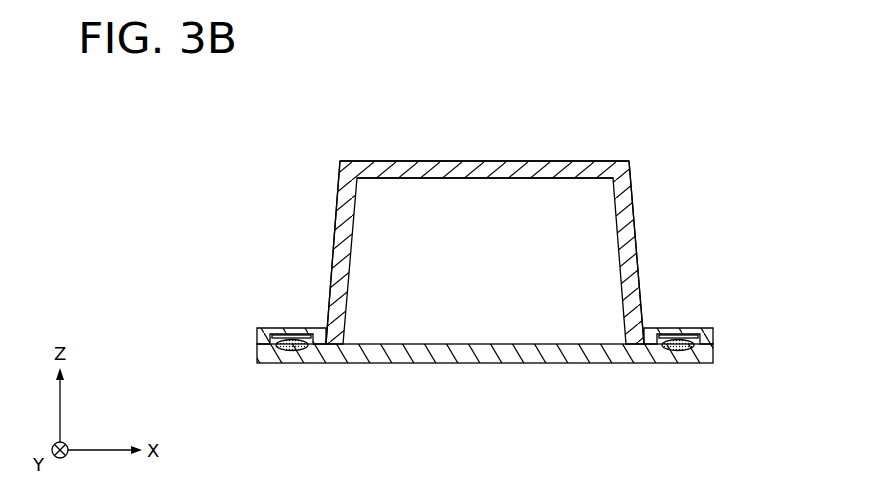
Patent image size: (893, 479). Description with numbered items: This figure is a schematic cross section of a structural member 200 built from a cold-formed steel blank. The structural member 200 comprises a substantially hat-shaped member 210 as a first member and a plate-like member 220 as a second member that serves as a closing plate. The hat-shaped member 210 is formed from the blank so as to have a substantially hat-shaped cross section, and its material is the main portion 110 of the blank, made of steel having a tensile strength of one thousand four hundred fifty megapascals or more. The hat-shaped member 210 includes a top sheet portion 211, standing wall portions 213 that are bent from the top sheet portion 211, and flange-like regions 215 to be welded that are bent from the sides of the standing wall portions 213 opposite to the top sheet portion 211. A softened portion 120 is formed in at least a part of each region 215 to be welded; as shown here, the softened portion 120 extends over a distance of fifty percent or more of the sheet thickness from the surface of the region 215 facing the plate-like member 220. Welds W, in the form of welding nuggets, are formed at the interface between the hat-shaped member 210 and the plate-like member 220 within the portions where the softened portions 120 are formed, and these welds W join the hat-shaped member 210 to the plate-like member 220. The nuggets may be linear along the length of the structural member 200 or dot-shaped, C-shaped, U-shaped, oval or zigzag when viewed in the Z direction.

The structural member 200 is at (221, 106).
The substantially hat-shaped member 210 is at (391, 144).
The top sheet portion 211 is at (487, 162).
The main portion 110 is at (570, 172).
The standing wall portions 213 is at (335, 218).
The regions to be welded 215 is at (257, 336).
The plate-like member 220 is at (485, 366).
The softened portion 120 is at (288, 337).
The welds W is at (294, 351).